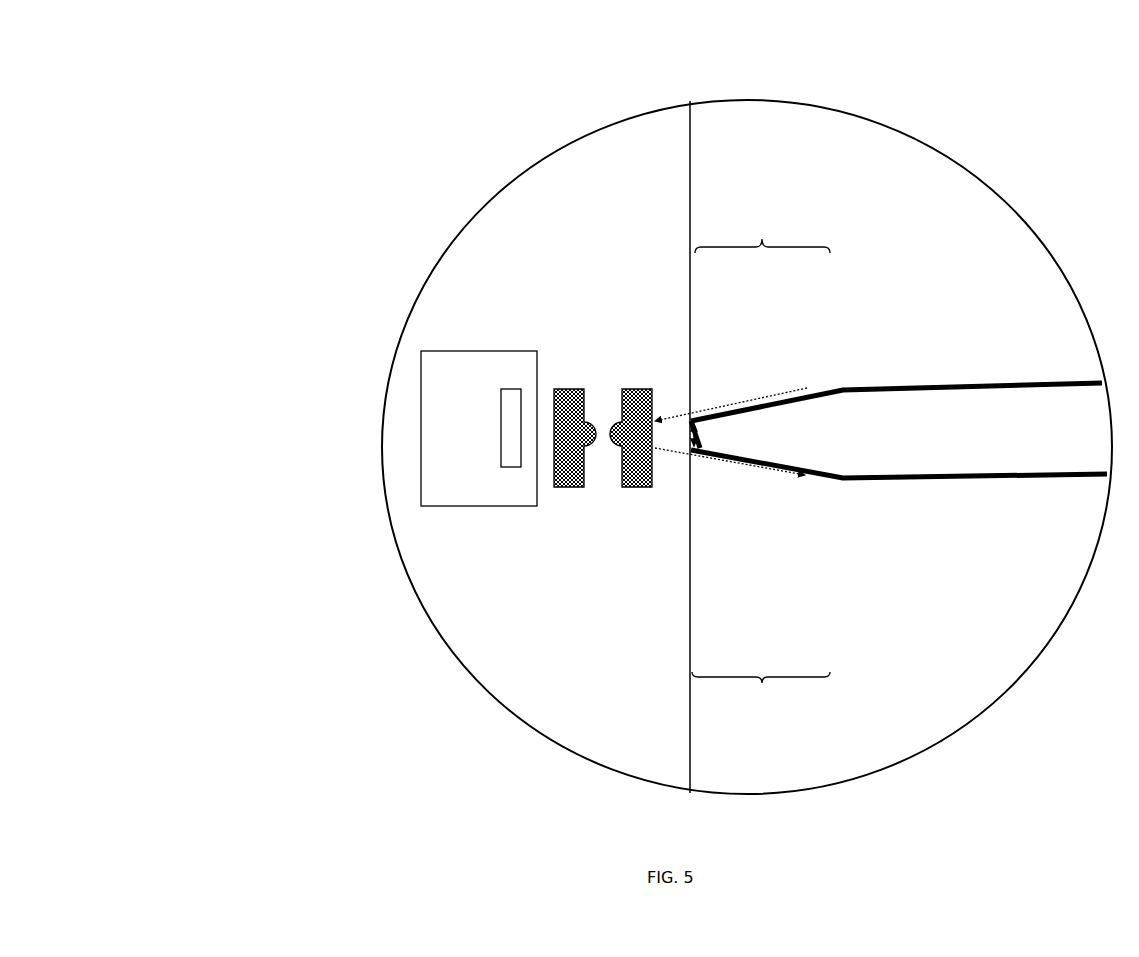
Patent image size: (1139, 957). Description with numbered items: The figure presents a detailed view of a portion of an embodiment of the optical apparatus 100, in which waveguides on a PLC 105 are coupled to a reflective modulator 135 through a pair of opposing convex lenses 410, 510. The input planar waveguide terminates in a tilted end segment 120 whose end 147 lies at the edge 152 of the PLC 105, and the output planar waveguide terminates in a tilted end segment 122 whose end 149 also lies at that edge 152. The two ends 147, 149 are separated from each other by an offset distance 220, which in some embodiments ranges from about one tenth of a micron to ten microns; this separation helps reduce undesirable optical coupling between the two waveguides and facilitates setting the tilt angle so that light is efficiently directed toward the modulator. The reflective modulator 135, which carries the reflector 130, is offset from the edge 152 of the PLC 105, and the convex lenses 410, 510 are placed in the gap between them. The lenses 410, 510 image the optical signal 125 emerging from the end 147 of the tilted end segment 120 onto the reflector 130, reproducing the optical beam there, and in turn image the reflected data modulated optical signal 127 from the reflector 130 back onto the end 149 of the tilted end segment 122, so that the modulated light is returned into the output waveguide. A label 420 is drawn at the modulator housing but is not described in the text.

The optical apparatus 100 is at (184, 84).
The PLC 105 is at (778, 150).
The tilted end segment 120 is at (762, 234).
The tilted end segment 122 is at (761, 690).
The optical signal 125 is at (783, 392).
The modulated optical signal 127 is at (788, 475).
The reflector 130 is at (512, 405).
The reflective modulator 135 is at (459, 483).
The end 147 is at (691, 419).
The end 149 is at (691, 455).
The edge 152 is at (690, 212).
The offset distance 220 is at (698, 447).
The convex lens 410 is at (632, 395).
The detector assembly 420 is at (511, 459).
The convex lens 510 is at (563, 395).